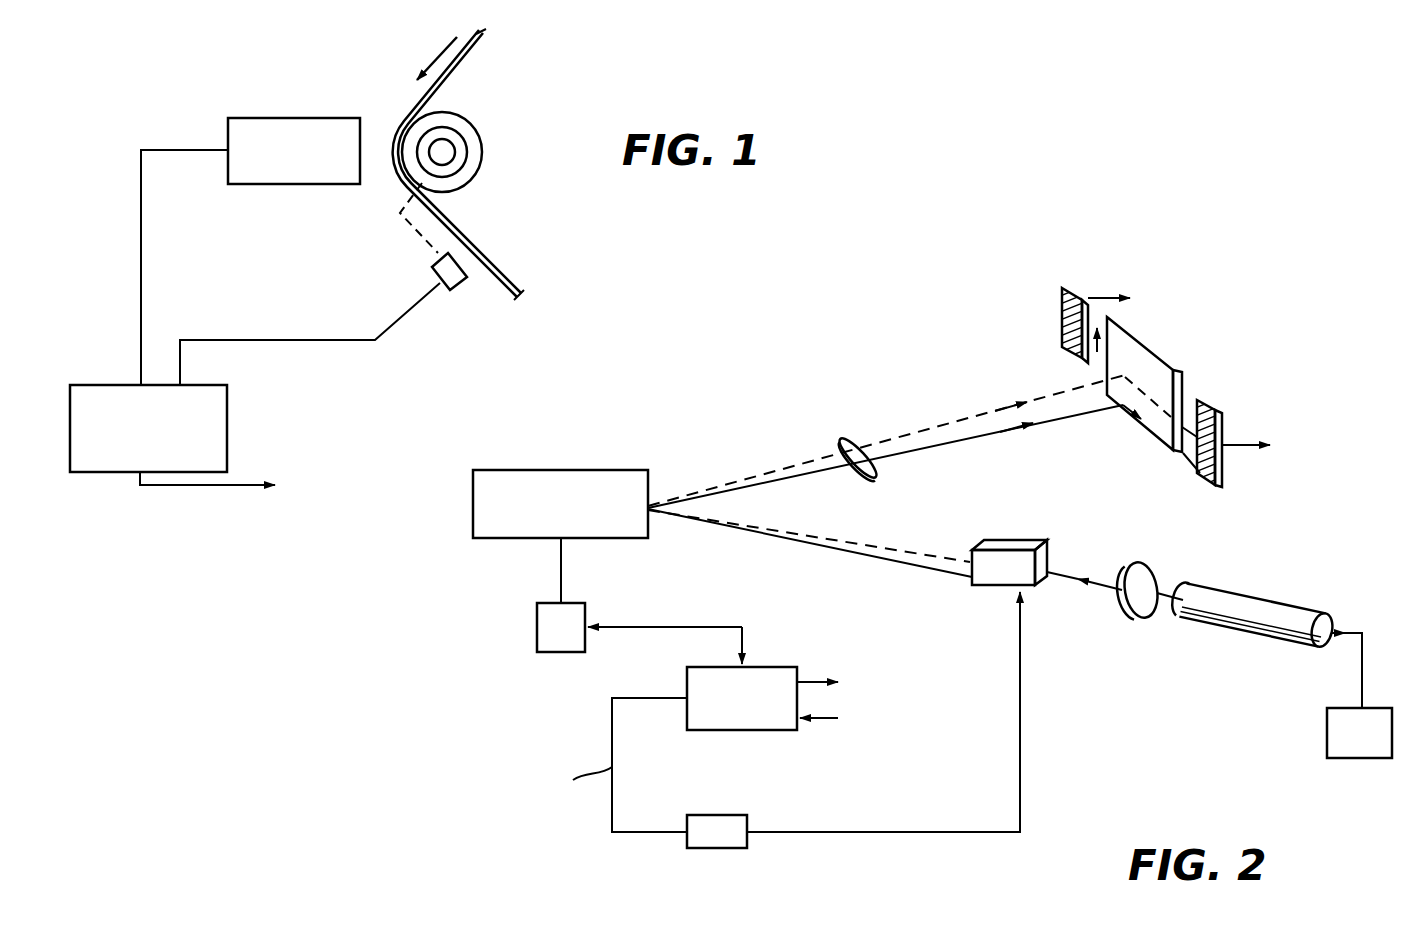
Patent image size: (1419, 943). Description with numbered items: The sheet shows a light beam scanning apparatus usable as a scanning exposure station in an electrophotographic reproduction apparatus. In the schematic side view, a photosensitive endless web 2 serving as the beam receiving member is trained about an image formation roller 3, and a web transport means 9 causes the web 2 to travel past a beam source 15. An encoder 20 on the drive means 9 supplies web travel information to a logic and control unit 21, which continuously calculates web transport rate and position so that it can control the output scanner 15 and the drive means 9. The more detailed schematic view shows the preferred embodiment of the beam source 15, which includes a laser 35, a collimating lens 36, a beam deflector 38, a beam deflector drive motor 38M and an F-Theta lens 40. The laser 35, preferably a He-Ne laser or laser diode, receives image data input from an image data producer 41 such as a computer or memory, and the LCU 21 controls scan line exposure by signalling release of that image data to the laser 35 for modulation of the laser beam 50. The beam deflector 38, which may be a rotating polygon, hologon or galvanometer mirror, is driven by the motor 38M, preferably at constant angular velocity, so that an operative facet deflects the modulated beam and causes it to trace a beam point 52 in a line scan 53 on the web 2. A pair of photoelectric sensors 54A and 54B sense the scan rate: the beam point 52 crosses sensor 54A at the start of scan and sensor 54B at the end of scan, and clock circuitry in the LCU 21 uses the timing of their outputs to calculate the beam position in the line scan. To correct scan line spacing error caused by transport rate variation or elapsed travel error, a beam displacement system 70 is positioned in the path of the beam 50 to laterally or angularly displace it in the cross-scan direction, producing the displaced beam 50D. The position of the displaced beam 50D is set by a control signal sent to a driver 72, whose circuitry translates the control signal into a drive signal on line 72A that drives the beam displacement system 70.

In FIG. 1, the photosensitive endless web 2 is at (485, 38).
In FIG. 2, the photosensitive endless web 2 is at (1165, 355).
In FIG. 1, the image formation roller 3 is at (470, 172).
In FIG. 1, the web transport means 9 is at (430, 177).
In FIG. 1, the beam source 15 is at (293, 118).
In FIG. 1, the encoder 20 is at (462, 287).
In FIG. 1, the logic and control unit 21 is at (80, 385).
In FIG. 2, the logic and control unit 21 is at (713, 732).
In FIG. 2, the laser 35 is at (1195, 588).
In FIG. 2, the collimating lens 36 is at (1143, 562).
In FIG. 2, the beam deflector 38 is at (519, 455).
In FIG. 2, the beam deflector drive motor 38M is at (537, 626).
In FIG. 2, the F-Theta lens 40 is at (880, 467).
In FIG. 2, the image data producer 41 is at (1332, 719).
In FIG. 2, the laser beam 50 is at (1058, 574).
In FIG. 2, the displaced beam 50D is at (785, 532).
In FIG. 2, the beam point 52 is at (1120, 408).
In FIG. 2, the line scan 53 is at (1140, 424).
In FIG. 2, the photoelectric sensor 54A is at (1225, 427).
In FIG. 2, the photoelectric sensor 54B is at (1060, 302).
In FIG. 2, the beam displacement system 70 is at (1009, 543).
In FIG. 2, the driver 72 is at (748, 818).
In FIG. 2, the drive signal line 72A is at (823, 833).